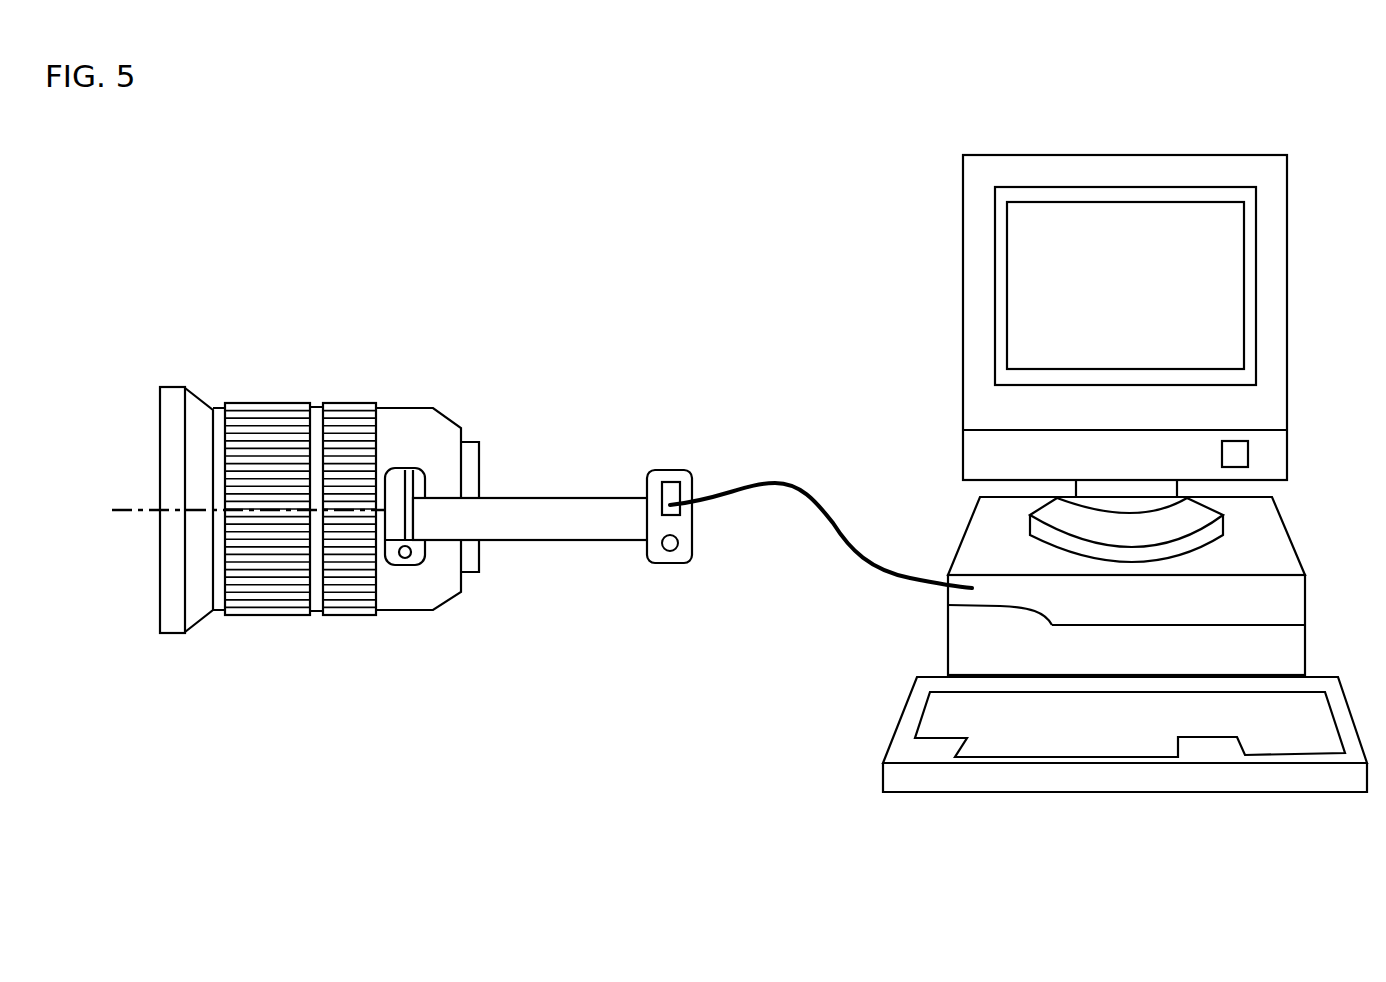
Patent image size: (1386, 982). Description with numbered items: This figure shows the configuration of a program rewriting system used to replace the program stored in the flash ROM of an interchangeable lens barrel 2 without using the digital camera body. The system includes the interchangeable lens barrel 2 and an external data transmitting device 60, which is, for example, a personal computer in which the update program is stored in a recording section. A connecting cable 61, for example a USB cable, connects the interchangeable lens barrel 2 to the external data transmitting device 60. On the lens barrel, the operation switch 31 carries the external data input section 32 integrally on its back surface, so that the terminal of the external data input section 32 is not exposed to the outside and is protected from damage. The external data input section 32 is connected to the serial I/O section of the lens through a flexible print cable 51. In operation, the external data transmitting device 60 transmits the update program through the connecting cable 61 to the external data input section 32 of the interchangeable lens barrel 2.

The interchangeable lens barrel 2 is at (395, 612).
The flexible print cable 51 is at (582, 541).
The operation switch 31 is at (677, 566).
The external data input section 32 is at (673, 480).
The connecting cable 61 is at (790, 482).
The external data transmitting device 60 is at (1122, 153).